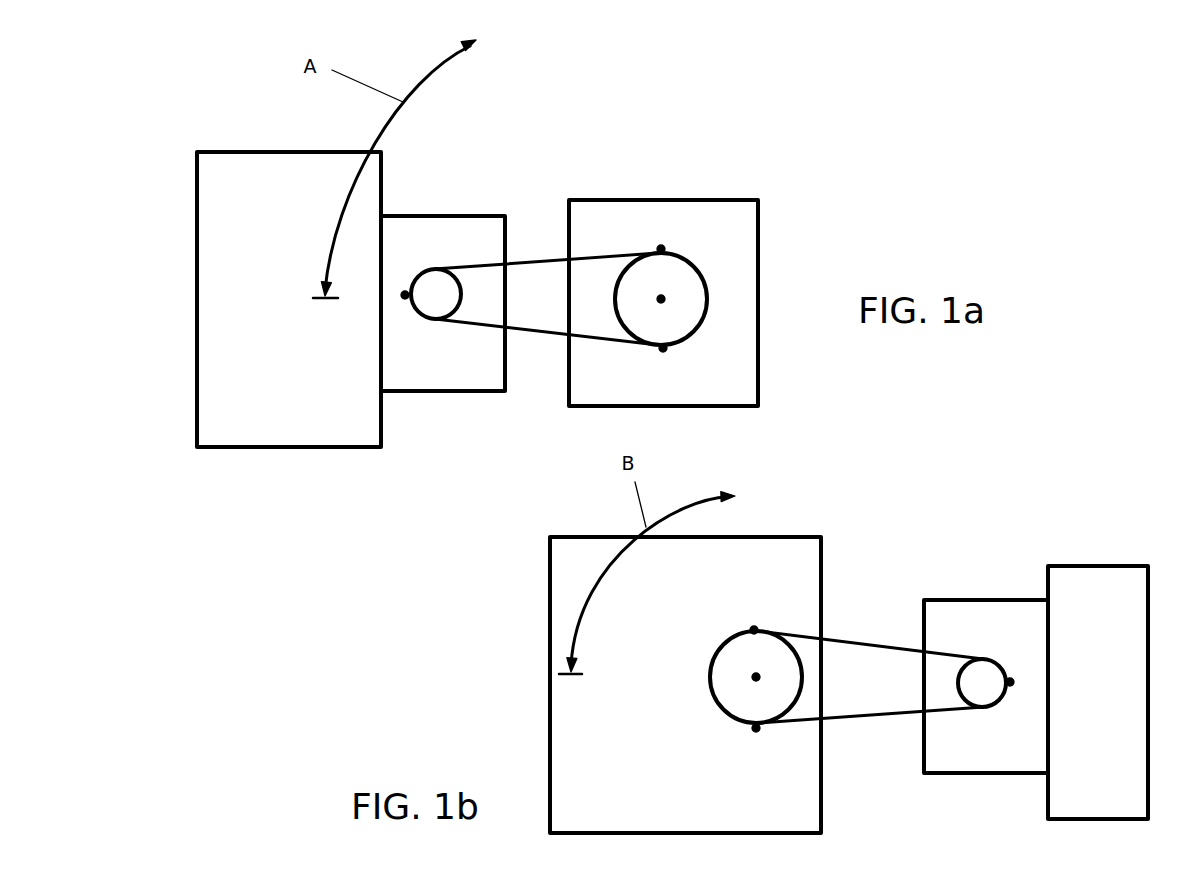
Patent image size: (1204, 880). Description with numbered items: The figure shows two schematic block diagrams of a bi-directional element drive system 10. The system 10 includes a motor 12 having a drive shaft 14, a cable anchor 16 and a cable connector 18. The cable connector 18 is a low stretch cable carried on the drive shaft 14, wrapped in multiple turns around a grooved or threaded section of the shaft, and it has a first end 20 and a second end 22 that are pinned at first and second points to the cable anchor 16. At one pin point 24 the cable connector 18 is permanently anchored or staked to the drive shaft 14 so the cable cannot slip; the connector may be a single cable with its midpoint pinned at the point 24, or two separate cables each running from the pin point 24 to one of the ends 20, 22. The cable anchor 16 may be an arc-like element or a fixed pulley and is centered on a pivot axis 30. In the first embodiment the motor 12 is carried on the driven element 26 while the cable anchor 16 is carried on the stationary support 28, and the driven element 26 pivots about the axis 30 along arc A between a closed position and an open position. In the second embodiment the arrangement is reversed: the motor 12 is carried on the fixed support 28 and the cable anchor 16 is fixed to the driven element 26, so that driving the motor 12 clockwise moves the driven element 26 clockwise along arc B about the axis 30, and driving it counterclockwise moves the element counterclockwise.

In FIG. 1A, the bi-directional element drive system 10 is at (776, 118).
In FIG. 1B, the bi-directional element drive system 10 is at (1012, 470).
In FIG. 1A, the motor 12 is at (440, 364).
In FIG. 1B, the motor 12 is at (966, 598).
In FIG. 1A, the drive shaft 14 is at (440, 292).
In FIG. 1B, the drive shaft 14 is at (981, 687).
In FIG. 1A, the cable anchor 16 is at (675, 285).
In FIG. 1B, the cable anchor 16 is at (712, 693).
In FIG. 1A, the cable connector 18 is at (534, 262).
In FIG. 1B, the cable connector 18 is at (873, 647).
In FIG. 1A, the first end 20 is at (662, 247).
In FIG. 1B, the first end 20 is at (756, 628).
In FIG. 1A, the second end 22 is at (662, 350).
In FIG. 1B, the second end 22 is at (757, 729).
In FIG. 1A, the pin point 24 is at (406, 292).
In FIG. 1B, the pin point 24 is at (1011, 679).
In FIG. 1A, the driven element 26 is at (260, 423).
In FIG. 1B, the driven element 26 is at (797, 535).
In FIG. 1A, the stationary support 28 is at (705, 220).
In FIG. 1B, the stationary support 28 is at (1082, 565).
In FIG. 1A, the pivot axis 30 is at (661, 299).
In FIG. 1B, the pivot axis 30 is at (756, 677).